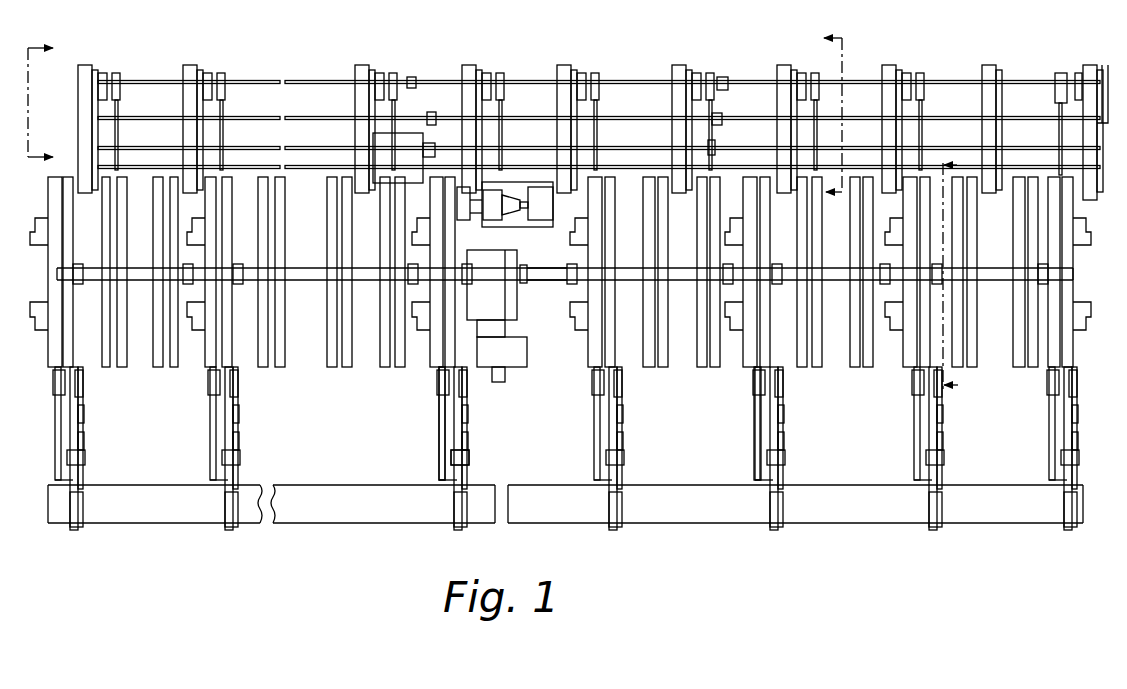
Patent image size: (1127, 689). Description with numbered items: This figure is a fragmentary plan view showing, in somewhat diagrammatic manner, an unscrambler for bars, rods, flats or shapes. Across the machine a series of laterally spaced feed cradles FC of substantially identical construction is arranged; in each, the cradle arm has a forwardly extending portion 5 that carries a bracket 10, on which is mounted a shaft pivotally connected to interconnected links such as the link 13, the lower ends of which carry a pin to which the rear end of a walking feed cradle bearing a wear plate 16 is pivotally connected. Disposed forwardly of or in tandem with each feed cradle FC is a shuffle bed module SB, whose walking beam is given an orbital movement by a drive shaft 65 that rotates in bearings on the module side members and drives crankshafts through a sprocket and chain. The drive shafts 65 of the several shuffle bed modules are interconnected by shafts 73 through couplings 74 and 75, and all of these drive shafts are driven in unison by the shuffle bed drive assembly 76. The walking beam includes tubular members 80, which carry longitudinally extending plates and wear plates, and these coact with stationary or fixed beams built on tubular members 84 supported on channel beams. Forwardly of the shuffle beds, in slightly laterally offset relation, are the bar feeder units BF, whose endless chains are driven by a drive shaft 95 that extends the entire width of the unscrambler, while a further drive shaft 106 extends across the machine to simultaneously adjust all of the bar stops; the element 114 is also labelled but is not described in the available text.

The cradle arm portion 5 is at (455, 447).
The bracket 10 is at (969, 278).
The link 13 is at (814, 120).
The wear plate 16 is at (753, 433).
The drive shaft 65 is at (894, 284).
The shaft 73 is at (295, 267).
The coupling 74 is at (523, 267).
The coupling 75 is at (567, 284).
The shuffle bed drive assembly 76 is at (497, 330).
The tubular member 80 is at (347, 367).
The tubular member 84 is at (332, 367).
The drive shaft 95 is at (612, 147).
The drive shaft 106 is at (612, 117).
The bed frame shaft 114 is at (625, 82).
The bar feeder unit BF is at (458, 94).
The feed cradle FC is at (250, 428).
The shuffle bed module SB is at (232, 352).